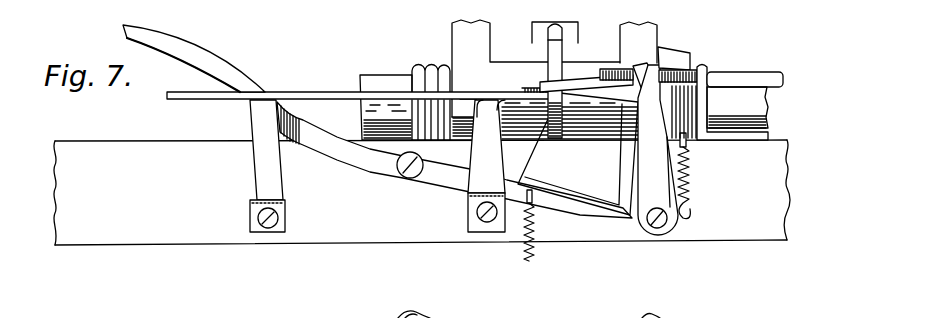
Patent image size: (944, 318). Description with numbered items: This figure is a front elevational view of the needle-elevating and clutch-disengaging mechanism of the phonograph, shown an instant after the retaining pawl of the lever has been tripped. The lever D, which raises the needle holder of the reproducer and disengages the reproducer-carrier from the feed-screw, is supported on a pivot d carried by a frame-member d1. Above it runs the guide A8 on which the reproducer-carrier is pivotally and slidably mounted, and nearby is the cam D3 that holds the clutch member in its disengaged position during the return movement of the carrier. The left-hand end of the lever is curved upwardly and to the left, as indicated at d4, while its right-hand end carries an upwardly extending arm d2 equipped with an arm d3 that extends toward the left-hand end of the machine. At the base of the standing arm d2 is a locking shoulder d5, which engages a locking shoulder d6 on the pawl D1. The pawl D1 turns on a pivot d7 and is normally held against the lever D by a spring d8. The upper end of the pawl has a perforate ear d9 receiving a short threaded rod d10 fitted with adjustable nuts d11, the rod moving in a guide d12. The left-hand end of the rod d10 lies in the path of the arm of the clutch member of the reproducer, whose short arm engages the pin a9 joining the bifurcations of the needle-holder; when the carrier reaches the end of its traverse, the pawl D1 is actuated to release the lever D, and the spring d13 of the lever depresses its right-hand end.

The frame-member d1 is at (206, 240).
The guide A8 is at (390, 62).
The needle-elevating and clutch-disengaging lever D is at (561, 203).
The pivot d is at (410, 179).
The upwardly extending arm d2 is at (633, 168).
The cam D3 is at (324, 79).
The curved end of lever d4 is at (210, 65).
The pin a9 is at (552, 30).
The arm d3 is at (565, 88).
The perforate ear d9 is at (625, 45).
The adjustable nuts d11 is at (640, 58).
The locking shoulder d5 is at (625, 220).
The pivot d7 is at (665, 229).
The locking shoulder d6 is at (645, 147).
The latch or pawl D1 is at (669, 180).
The spring d8 is at (690, 190).
The short threaded rod d10 is at (690, 67).
The guide d12 is at (712, 70).
The spring d13 is at (525, 243).